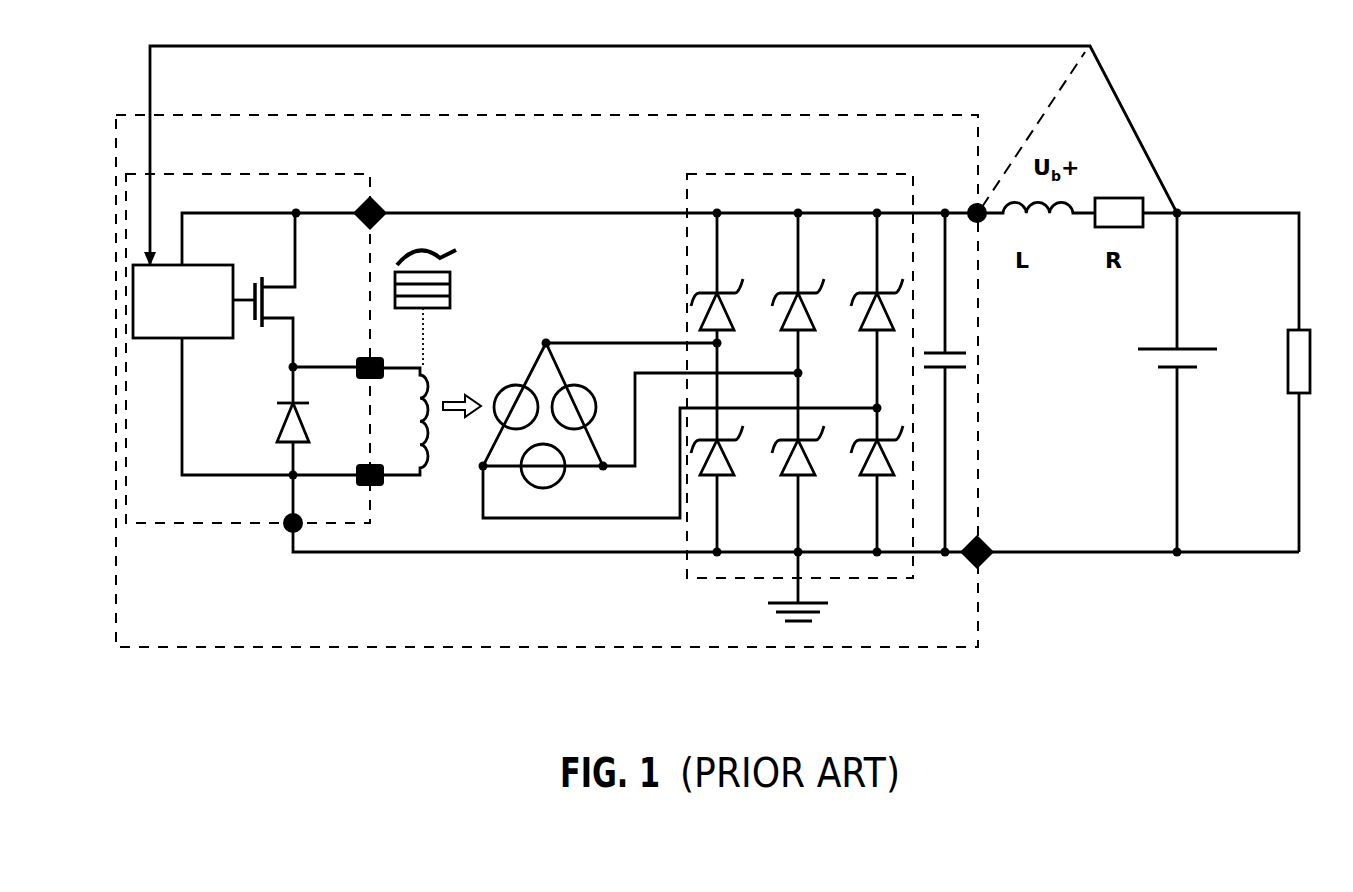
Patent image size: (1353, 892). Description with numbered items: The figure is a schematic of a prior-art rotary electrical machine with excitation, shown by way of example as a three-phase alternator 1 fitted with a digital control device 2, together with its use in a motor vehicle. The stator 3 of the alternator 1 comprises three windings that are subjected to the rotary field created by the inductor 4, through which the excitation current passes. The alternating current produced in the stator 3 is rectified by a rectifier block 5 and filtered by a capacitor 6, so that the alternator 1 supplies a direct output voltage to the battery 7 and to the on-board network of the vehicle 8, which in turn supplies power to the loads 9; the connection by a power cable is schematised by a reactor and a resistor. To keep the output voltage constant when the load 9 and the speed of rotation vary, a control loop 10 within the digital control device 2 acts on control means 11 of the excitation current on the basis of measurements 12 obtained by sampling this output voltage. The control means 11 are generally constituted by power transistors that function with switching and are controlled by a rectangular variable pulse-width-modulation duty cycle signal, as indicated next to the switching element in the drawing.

The three-phase alternator 1 is at (561, 104).
The digital control device 2 is at (306, 172).
The stator 3 is at (534, 363).
The inductor 4 is at (426, 482).
The rectifier block 5 is at (773, 173).
The capacitor 6 is at (968, 361).
The battery 7 is at (1171, 358).
The on-board network of the vehicle 8 is at (1229, 207).
The loads 9 is at (1300, 368).
The control loop 10 is at (167, 340).
The control means 11 is at (253, 292).
The measurements 12 is at (866, 44).